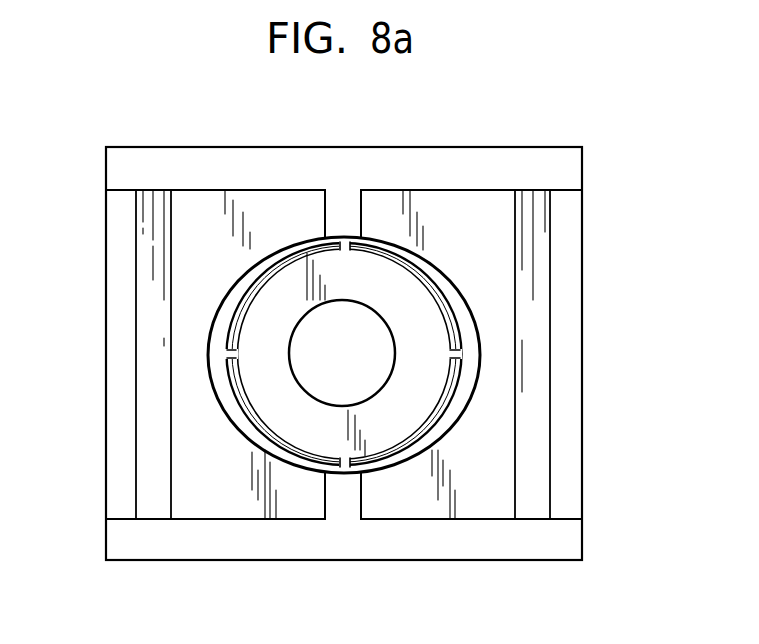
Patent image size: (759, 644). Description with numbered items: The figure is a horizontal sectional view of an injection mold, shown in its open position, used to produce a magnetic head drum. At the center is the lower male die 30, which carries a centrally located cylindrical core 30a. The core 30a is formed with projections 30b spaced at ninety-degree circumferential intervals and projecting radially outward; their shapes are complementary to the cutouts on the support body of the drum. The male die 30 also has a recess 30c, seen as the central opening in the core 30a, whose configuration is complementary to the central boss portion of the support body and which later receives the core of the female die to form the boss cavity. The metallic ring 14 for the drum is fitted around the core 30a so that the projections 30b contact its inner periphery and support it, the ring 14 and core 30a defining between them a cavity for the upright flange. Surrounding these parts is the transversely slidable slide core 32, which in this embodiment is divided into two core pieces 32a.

The metallic ring 14 is at (278, 248).
The lower male die 30 is at (330, 354).
The cylindrical core 30a is at (385, 423).
The projections 30b is at (346, 244).
The recess 30c is at (290, 356).
The slide core 32 is at (368, 390).
The core pieces 32a is at (595, 285).